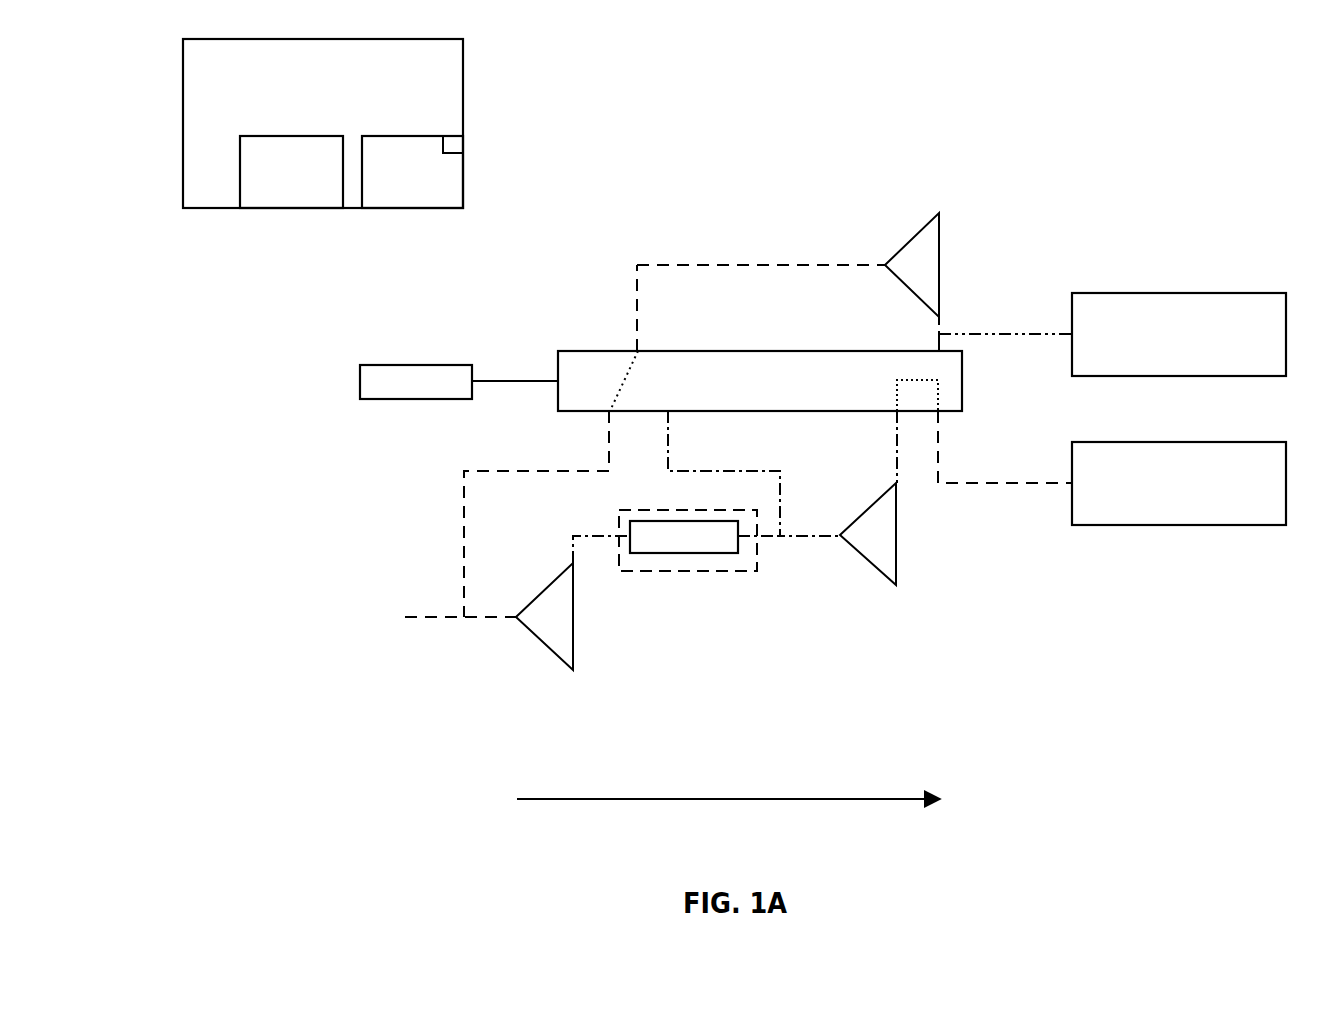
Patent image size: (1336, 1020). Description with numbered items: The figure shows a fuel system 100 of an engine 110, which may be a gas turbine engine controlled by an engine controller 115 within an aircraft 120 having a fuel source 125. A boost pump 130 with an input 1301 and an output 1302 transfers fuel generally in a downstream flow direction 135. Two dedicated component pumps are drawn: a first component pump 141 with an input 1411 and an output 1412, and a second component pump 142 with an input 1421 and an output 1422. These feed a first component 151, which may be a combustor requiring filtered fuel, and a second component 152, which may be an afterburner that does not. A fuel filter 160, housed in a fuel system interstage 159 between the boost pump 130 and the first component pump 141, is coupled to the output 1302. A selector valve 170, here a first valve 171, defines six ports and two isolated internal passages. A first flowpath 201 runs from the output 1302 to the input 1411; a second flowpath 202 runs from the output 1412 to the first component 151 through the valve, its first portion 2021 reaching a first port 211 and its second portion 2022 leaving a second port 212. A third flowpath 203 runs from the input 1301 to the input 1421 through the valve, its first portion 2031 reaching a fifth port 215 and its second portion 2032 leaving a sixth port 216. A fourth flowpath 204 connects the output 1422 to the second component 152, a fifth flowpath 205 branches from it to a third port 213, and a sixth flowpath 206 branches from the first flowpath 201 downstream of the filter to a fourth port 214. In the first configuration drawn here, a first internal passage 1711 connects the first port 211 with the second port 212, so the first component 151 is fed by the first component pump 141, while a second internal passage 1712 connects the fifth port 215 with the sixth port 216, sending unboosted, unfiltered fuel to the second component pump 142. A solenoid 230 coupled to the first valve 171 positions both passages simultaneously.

The fuel system 100 is at (1212, 68).
The engine 110 is at (410, 210).
The engine controller 115 is at (463, 148).
The aircraft 120 is at (183, 118).
The fuel source 125 is at (283, 210).
The boost pump 130 is at (565, 660).
The input 1301 is at (513, 618).
The output 1302 is at (573, 563).
The downstream flow direction 135 is at (690, 800).
The first component pump 141 is at (893, 585).
The input 1411 is at (840, 538).
The output 1412 is at (900, 485).
The second component pump 142 is at (935, 213).
The input 1421 is at (885, 265).
The output 1422 is at (942, 318).
The first component 151 is at (1220, 442).
The second component 152 is at (1220, 293).
The fuel system interstage 159 is at (740, 572).
The fuel filter 160 is at (710, 555).
The selector valve 170 is at (556, 360).
The first valve 171 is at (560, 352).
The first internal passage 1711 is at (940, 392).
The second internal passage 1712 is at (622, 383).
The first flowpath 201 is at (605, 548).
The second flowpath 202 is at (1042, 583).
The first portion of the second flowpath 2021 is at (895, 482).
The second portion of the second flowpath 2022 is at (1040, 484).
The third flowpath 203 is at (462, 523).
The first portion of the third flowpath 2031 is at (462, 505).
The second portion of the third flowpath 2032 is at (722, 260).
The fourth flowpath 204 is at (1040, 318).
The fifth flowpath 205 is at (935, 346).
The sixth flowpath 206 is at (678, 478).
The first port 211 is at (895, 412).
The second port 212 is at (940, 412).
The third port 213 is at (935, 352).
The fourth port 214 is at (672, 412).
The fifth port 215 is at (605, 412).
The sixth port 216 is at (640, 350).
The solenoid 230 is at (360, 382).